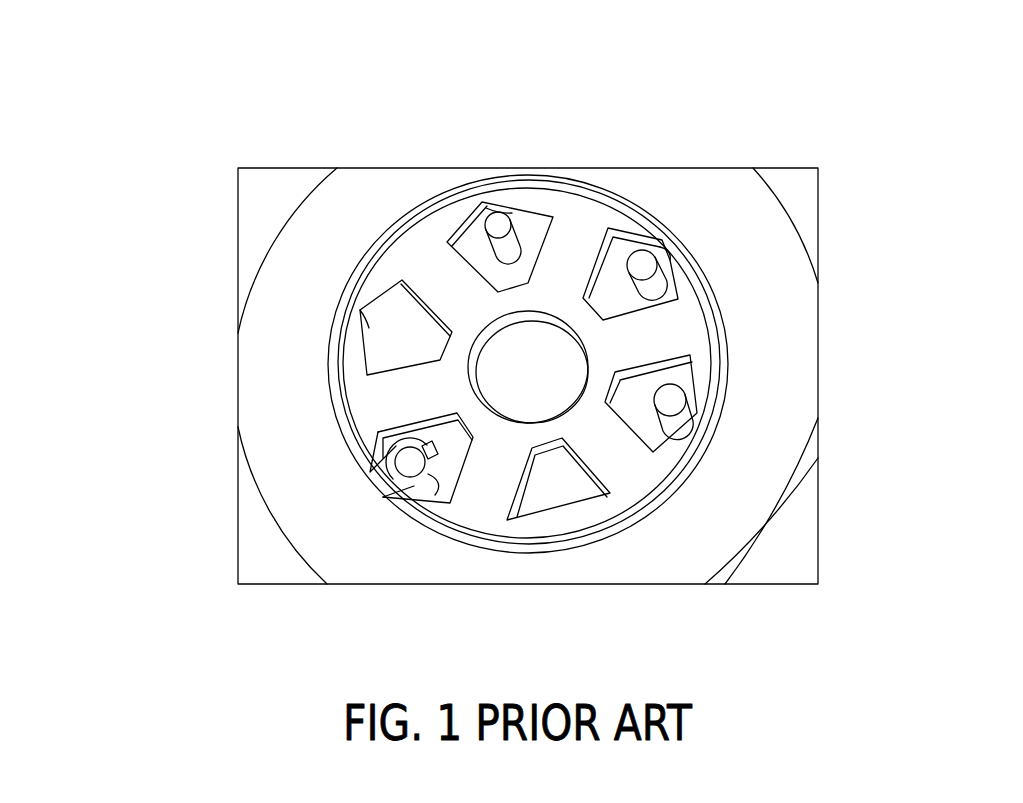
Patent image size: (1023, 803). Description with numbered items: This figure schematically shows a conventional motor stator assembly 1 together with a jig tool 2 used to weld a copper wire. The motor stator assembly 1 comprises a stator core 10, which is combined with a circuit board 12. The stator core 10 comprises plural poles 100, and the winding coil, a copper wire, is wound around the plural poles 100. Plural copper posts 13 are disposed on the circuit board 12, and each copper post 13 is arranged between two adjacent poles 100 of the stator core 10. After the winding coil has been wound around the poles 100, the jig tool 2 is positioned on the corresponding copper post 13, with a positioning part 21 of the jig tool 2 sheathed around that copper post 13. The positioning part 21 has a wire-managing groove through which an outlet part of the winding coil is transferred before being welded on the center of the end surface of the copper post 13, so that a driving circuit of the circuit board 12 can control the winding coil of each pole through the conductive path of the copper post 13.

The motor stator assembly 1 is at (1001, 106).
The jig tool 2 is at (342, 435).
The stator core 10 is at (475, 310).
The poles 100 is at (393, 405).
The circuit board 12 is at (608, 285).
The copper posts 13 is at (410, 460).
The positioning part 21 is at (397, 487).